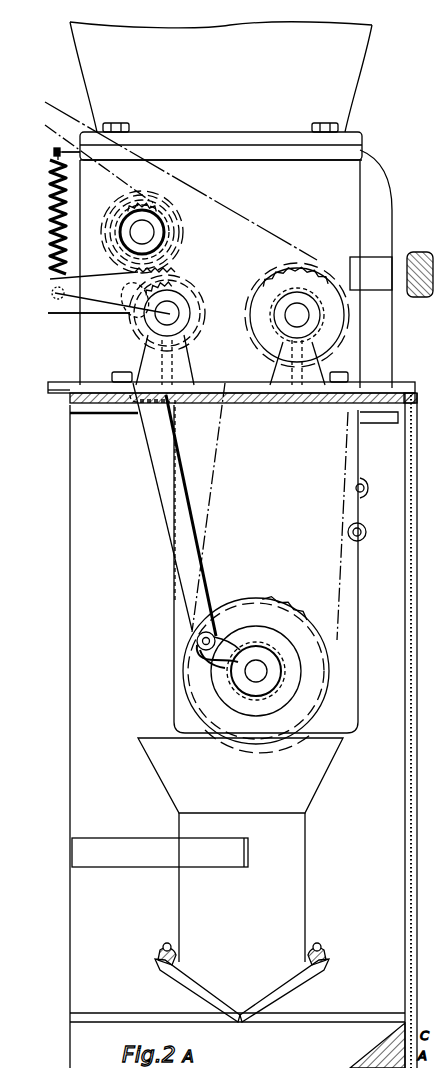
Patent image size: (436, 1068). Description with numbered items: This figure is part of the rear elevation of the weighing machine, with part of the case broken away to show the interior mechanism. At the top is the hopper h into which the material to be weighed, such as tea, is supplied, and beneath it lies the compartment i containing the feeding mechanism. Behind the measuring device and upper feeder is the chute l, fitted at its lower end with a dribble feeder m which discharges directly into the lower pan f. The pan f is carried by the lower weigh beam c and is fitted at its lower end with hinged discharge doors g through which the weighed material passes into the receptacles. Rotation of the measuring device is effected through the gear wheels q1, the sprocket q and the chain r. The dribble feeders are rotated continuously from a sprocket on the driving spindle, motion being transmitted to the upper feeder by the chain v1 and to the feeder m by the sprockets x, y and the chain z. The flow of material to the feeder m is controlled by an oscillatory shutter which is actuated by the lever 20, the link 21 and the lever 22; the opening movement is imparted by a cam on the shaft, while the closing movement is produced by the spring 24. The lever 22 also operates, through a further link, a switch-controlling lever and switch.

The hopper h is at (221, 77).
The compartment i is at (352, 186).
The chain r is at (50, 125).
The spring 24 is at (55, 202).
The sprocket q is at (133, 205).
The gear wheels q1 is at (174, 275).
The chain v1 is at (85, 305).
The lever 22 is at (86, 331).
The sprocket x is at (272, 272).
The link 21 is at (155, 470).
The chain z is at (208, 500).
The sprocket y is at (282, 600).
The dribble feeder m is at (238, 690).
The chute l is at (176, 640).
The lever 20 is at (206, 668).
The pan f is at (296, 896).
The weigh beam c is at (110, 858).
The discharge doors g is at (265, 993).